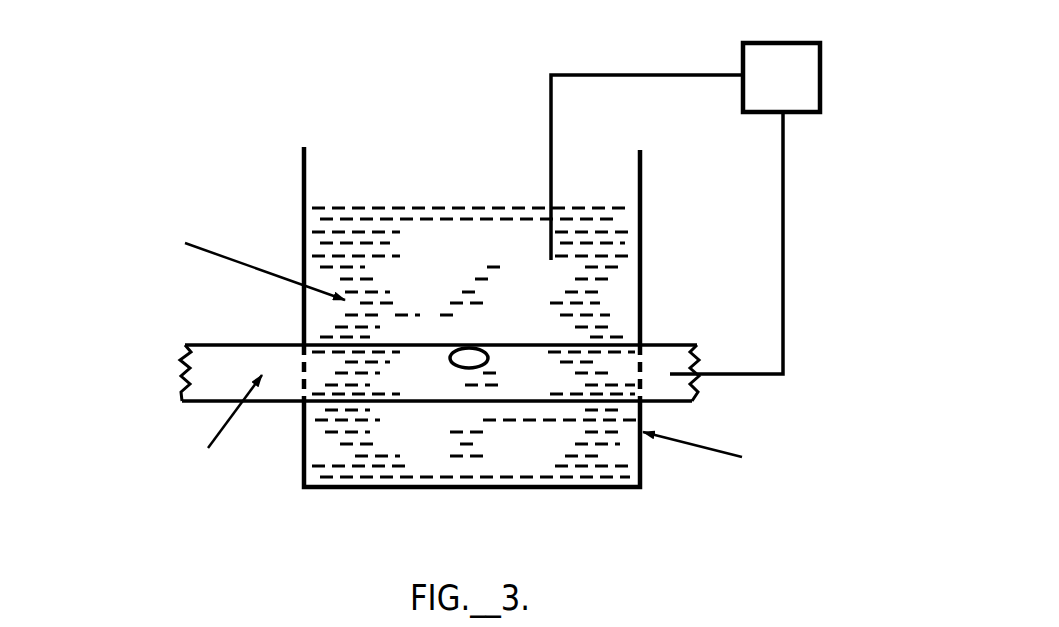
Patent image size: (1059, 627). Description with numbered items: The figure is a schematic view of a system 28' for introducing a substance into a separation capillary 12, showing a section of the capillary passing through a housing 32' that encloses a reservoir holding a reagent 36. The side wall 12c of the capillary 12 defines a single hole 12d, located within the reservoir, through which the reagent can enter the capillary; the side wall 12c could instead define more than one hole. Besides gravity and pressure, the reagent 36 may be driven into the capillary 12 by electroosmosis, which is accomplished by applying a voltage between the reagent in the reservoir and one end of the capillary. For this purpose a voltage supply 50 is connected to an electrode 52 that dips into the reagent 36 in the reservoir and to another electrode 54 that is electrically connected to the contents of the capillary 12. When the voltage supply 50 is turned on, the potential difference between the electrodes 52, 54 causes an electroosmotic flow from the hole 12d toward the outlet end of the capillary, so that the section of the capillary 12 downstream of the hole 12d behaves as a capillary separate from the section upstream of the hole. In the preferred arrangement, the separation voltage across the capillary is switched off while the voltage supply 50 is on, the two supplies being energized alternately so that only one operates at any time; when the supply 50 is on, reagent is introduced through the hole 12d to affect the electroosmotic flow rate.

The capillary electrophoresis apparatus 28' is at (470, 289).
The separation capillary 12 is at (220, 343).
The side wall 12c is at (749, 297).
The hole 12d is at (488, 366).
The housing 32' is at (525, 317).
The reagent 36 is at (472, 268).
The voltage supply 50 is at (821, 70).
The electrode 52 is at (549, 200).
The electrode 54 is at (738, 375).